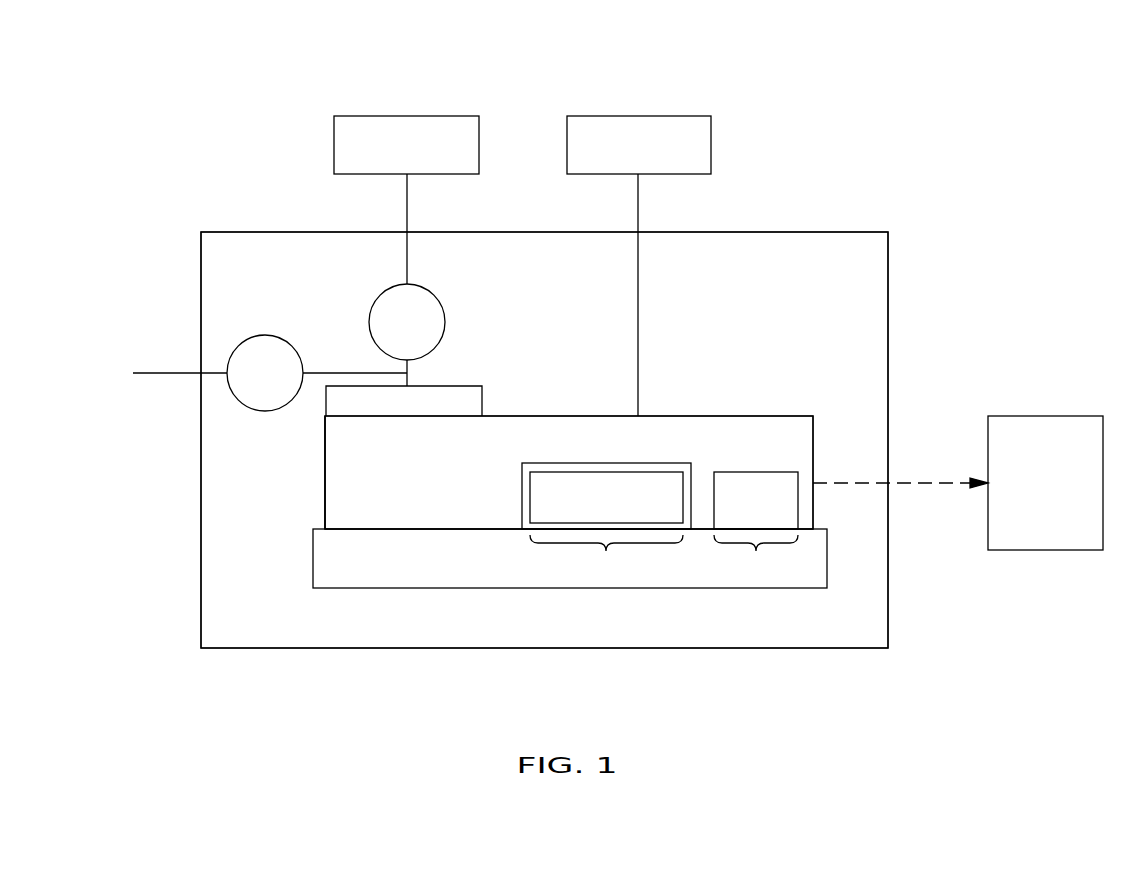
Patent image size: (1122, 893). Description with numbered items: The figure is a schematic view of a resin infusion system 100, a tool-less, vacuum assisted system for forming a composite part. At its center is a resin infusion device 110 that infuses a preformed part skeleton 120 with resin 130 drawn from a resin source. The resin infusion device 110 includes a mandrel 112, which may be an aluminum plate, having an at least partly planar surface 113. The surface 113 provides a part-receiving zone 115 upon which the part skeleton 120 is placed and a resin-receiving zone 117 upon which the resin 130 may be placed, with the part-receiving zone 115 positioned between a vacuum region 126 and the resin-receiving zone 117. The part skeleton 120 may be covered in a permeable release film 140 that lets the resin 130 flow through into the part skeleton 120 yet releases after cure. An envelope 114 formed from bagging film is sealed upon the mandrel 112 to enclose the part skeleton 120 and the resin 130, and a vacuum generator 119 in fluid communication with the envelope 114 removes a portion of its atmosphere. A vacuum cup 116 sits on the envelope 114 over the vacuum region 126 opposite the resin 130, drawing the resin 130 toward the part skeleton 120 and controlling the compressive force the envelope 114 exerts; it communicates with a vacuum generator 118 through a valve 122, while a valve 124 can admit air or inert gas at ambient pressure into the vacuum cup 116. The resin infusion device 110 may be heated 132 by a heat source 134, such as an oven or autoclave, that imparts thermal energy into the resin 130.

The resin infusion system 100 is at (237, 90).
The resin infusion device 110 is at (856, 232).
The mandrel 112 is at (475, 588).
The surface 113 is at (343, 528).
The envelope 114 is at (765, 416).
The part-receiving zone 115 is at (606, 559).
The vacuum cup 116 is at (465, 386).
The resin-receiving zone 117 is at (756, 559).
The vacuum generator 118 is at (388, 158).
The vacuum generator 119 is at (620, 158).
The part skeleton 120 is at (588, 516).
The valve 122 is at (388, 335).
The valve 124 is at (246, 386).
The vacuum region 126 is at (386, 488).
The resin 130 is at (737, 516).
The heating 132 is at (940, 488).
The heat source 134 is at (1026, 493).
The permeable release film 140 is at (662, 463).